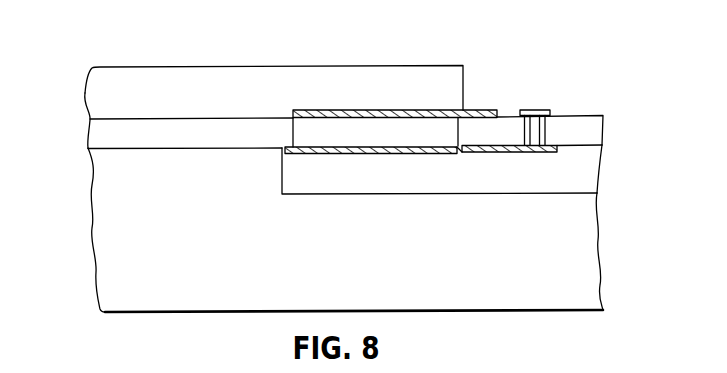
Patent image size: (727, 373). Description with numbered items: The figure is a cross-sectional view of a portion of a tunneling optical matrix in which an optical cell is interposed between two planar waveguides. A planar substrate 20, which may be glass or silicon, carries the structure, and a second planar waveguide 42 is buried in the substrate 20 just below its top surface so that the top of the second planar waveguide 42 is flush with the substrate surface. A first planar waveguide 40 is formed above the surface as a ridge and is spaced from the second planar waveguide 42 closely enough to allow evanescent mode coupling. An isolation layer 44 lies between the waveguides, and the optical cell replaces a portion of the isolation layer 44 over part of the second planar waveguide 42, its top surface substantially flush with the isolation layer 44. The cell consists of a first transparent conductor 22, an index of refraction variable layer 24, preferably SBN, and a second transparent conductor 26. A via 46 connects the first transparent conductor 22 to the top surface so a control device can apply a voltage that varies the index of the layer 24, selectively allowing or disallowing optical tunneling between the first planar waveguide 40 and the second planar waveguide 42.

The planar substrate 20 is at (575, 263).
The first transparent conductor 22 is at (310, 151).
The index of refraction variable layer 24 is at (305, 131).
The second transparent conductor 26 is at (330, 108).
The first planar waveguide 40 is at (412, 80).
The second planar waveguide 42 is at (573, 175).
The isolation layer 44 is at (107, 133).
The via 46 is at (548, 132).